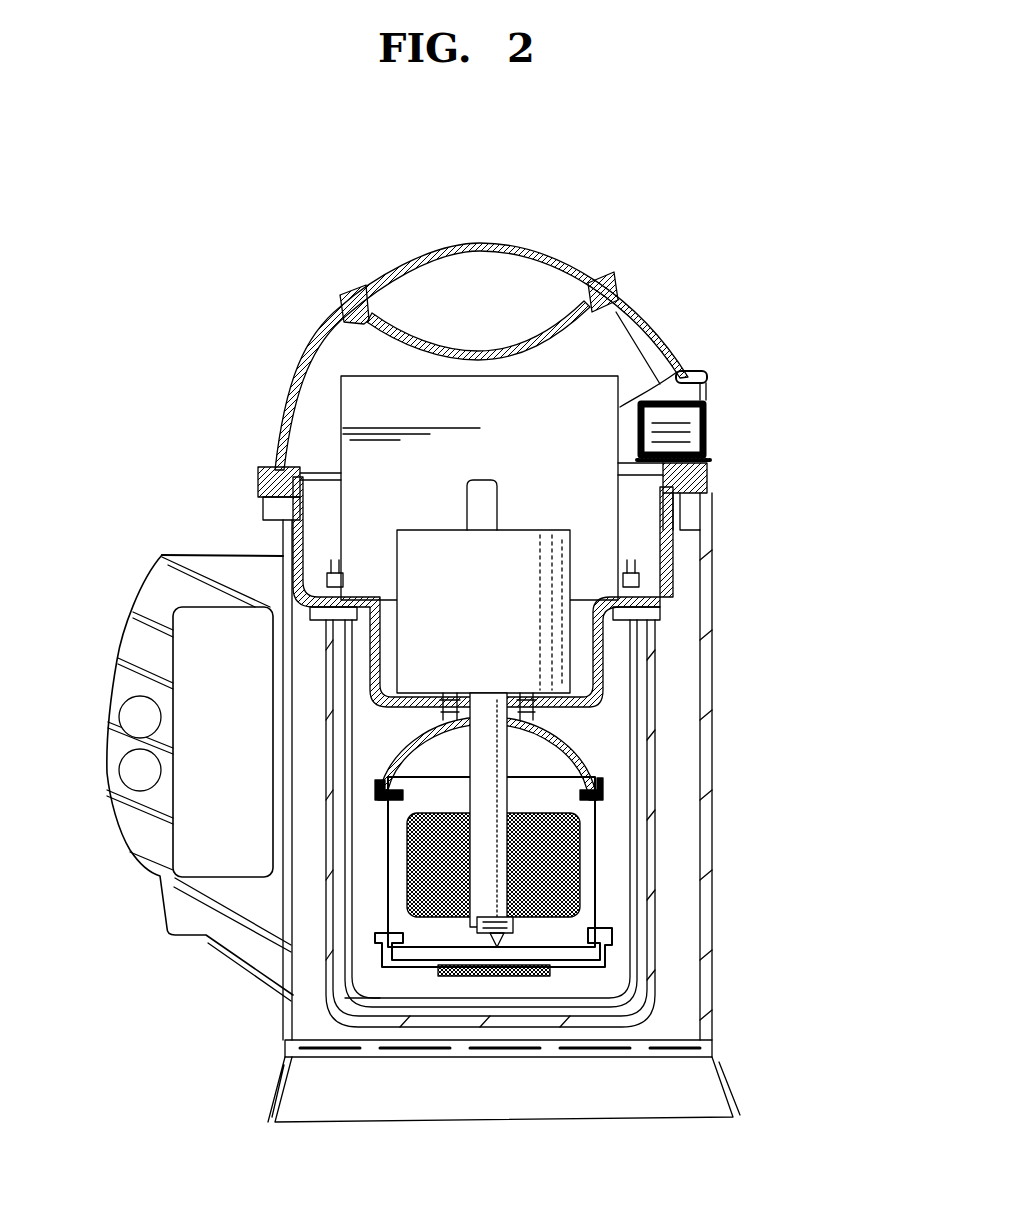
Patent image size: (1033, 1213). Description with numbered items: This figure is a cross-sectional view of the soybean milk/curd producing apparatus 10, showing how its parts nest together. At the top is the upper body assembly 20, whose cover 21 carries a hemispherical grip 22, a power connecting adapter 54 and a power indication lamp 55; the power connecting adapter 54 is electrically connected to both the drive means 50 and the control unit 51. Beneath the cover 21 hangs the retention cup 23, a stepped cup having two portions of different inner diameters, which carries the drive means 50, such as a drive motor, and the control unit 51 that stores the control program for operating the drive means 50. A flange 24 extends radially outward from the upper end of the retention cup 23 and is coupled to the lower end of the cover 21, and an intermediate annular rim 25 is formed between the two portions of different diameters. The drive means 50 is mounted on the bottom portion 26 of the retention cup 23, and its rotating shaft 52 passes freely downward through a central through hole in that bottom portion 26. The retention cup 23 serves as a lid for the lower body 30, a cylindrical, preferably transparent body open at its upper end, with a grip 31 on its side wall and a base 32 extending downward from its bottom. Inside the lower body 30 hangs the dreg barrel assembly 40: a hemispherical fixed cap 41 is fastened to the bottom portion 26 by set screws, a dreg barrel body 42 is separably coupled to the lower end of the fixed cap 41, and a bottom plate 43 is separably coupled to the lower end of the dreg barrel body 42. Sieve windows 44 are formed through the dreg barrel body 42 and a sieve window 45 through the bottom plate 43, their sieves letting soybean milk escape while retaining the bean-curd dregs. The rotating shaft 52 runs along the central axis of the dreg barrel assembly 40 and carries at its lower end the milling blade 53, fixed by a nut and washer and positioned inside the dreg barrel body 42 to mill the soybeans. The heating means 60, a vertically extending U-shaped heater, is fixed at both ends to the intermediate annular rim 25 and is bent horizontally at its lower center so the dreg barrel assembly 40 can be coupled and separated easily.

The soybean milk/curd producing apparatus 10 is at (534, 211).
The upper body assembly 20 is at (666, 308).
The cover 21 is at (656, 340).
The grip 22 is at (573, 260).
The retention cup 23 is at (672, 582).
The flange 24 is at (711, 480).
The intermediate annular rim 25 is at (657, 690).
The bottom portion 26 is at (580, 723).
The lower body 30 is at (712, 638).
The grip 31 is at (148, 598).
The base 32 is at (722, 1073).
The dreg barrel assembly 40 is at (612, 748).
The hemispherical fixed cap 41 is at (499, 755).
The dreg barrel body 42 is at (597, 845).
The bottom plate 43 is at (602, 935).
The sieve window 44 is at (575, 870).
The sieve window 45 is at (505, 977).
The drive means 50 is at (423, 573).
The control unit 51 is at (356, 405).
The rotating shaft 52 is at (578, 778).
The milling blade 53 is at (360, 983).
The power connecting adapter 54 is at (711, 425).
The power indication lamp 55 is at (711, 375).
The heating means 60 is at (287, 992).